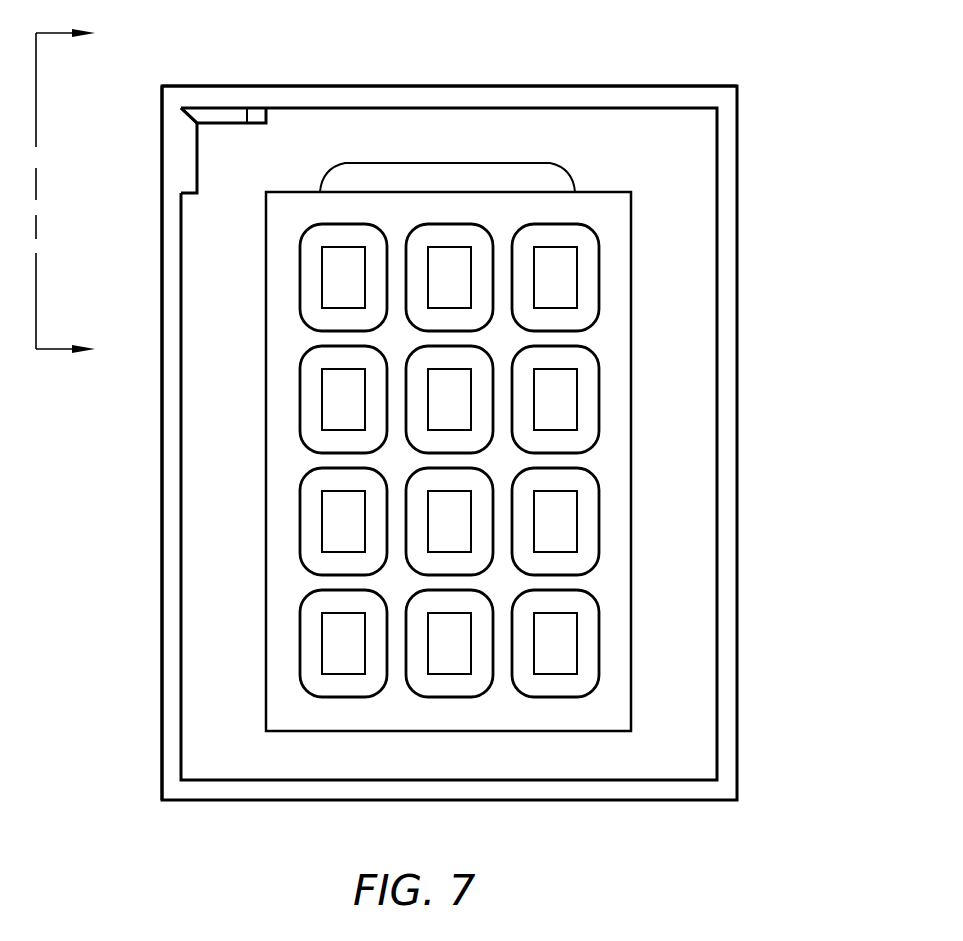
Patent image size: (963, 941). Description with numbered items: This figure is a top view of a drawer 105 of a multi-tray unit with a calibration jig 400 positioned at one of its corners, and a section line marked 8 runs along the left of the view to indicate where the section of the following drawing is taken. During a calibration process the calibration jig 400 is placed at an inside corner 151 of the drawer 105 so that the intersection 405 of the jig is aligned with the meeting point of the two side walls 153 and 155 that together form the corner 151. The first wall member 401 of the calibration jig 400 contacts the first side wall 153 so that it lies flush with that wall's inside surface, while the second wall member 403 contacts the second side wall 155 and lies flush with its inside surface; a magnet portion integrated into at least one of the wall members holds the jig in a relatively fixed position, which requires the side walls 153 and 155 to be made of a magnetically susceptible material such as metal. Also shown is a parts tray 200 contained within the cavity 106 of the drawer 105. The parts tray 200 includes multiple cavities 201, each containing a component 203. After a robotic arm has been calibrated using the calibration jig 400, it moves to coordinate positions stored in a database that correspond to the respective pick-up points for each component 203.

The section line 8- 8 is at (65, 193).
The drawer 105 is at (727, 148).
The cavity 106 is at (677, 243).
The inside corner 151 is at (195, 122).
The first side wall 153 is at (172, 280).
The second side wall 155 is at (442, 97).
The parts tray 200 is at (613, 385).
The cavities 201 is at (585, 517).
The component 203 is at (562, 655).
The calibration jig 400 is at (227, 115).
The first wall member 401 is at (195, 167).
The second wall member 403 is at (247, 119).
The intersection 405 is at (197, 124).